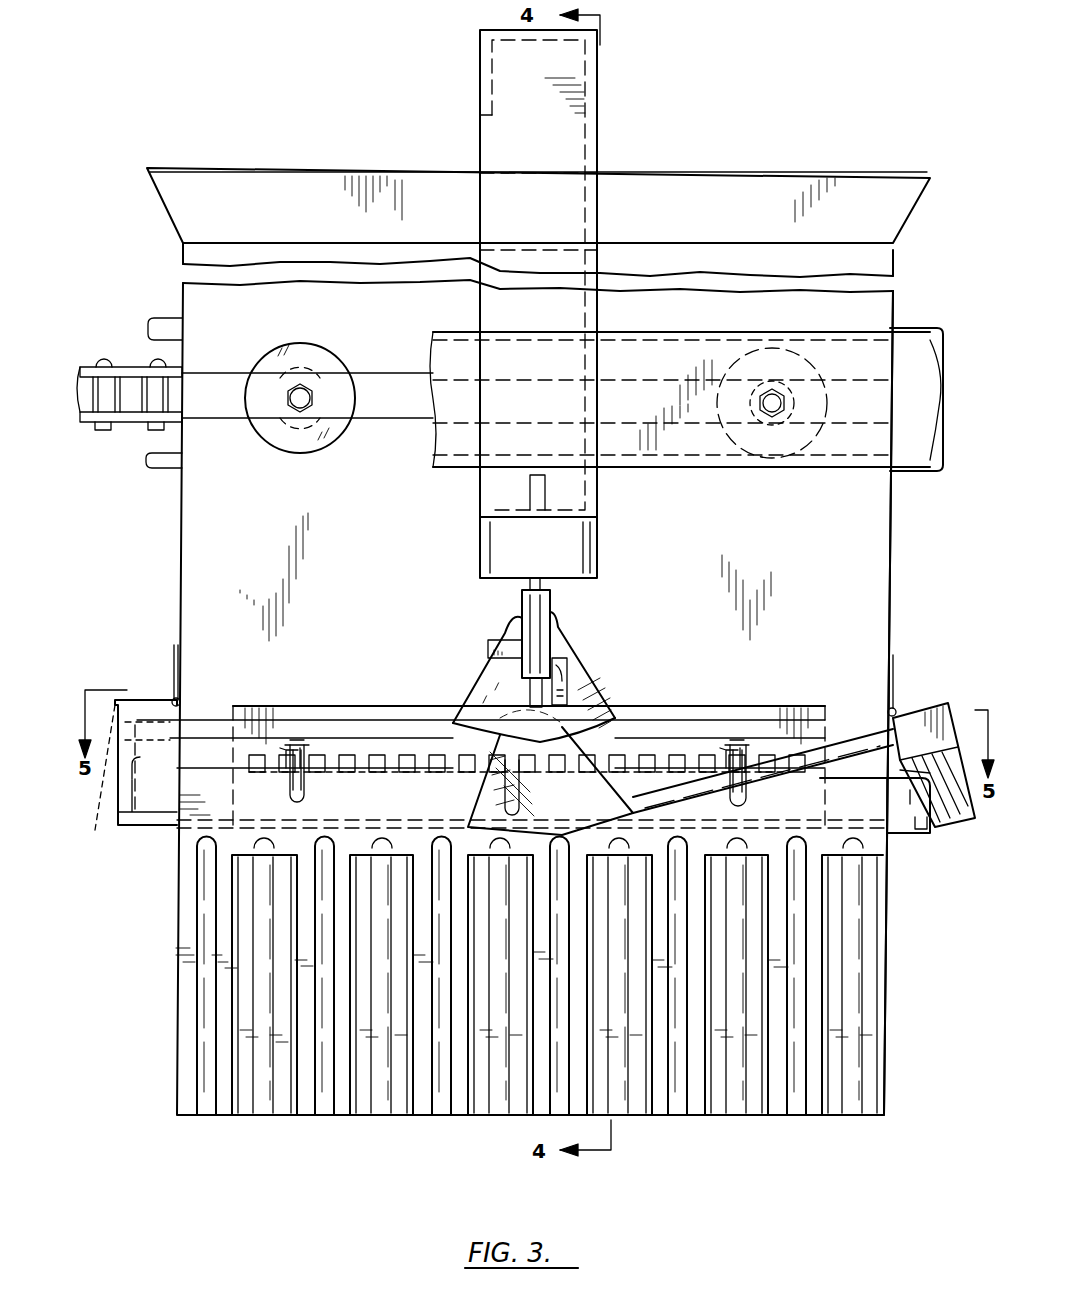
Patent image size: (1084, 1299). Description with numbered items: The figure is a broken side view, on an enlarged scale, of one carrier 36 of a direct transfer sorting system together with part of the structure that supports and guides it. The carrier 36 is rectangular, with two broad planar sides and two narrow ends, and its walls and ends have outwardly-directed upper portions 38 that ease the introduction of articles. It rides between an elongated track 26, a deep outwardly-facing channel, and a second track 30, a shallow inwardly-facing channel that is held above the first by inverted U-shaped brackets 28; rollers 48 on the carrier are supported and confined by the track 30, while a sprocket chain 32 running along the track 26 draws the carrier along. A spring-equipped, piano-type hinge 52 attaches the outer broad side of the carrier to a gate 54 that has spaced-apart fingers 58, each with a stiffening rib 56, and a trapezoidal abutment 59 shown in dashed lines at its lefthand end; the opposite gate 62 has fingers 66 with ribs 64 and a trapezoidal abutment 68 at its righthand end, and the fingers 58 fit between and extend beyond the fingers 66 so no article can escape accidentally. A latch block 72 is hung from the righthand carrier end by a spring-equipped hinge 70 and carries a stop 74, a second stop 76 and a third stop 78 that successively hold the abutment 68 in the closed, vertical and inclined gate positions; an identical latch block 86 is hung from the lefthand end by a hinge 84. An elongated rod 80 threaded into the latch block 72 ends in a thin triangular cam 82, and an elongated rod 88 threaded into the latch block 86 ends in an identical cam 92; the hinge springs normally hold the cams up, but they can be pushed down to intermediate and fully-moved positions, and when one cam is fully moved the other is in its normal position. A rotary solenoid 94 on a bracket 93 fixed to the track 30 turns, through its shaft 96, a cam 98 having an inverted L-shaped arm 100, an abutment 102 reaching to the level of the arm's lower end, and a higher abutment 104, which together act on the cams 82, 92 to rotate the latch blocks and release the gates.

The track 26 is at (162, 470).
The inverted U-shaped brackets 28 is at (480, 300).
The second track 30 is at (838, 470).
The sprocket chain 32 is at (128, 445).
The carrier 36 is at (903, 280).
The outwardly-directed upper portions 38 is at (888, 187).
The rollers 48 is at (298, 450).
The spring-equipped piano-type hinge 52 is at (346, 737).
The gate 54 is at (200, 827).
The stiffening rib 56 is at (202, 1117).
The fingers 58 is at (176, 1120).
The abutment 59 is at (118, 806).
The gate 62 is at (887, 900).
The stiffening rib 64 is at (264, 1114).
The fingers 66 is at (244, 1114).
The abutment 68 is at (894, 832).
The spring-equipped piano-type hinge 70 is at (894, 686).
The latch block 72 is at (944, 696).
The stop 74 is at (960, 810).
The second stop 76 is at (943, 826).
The third stop 78 is at (920, 845).
The elongated rod 80 is at (850, 746).
The cam 82 is at (477, 791).
The spring-equipped piano-type hinge 84 is at (174, 660).
The latch block 86 is at (120, 712).
The elongated rod 88 is at (211, 713).
The cam 92 is at (573, 680).
The bracket 93 is at (480, 495).
The rotary solenoid 94 is at (490, 554).
The shaft 96 is at (522, 594).
The cam 98 is at (550, 609).
The inverted L-shaped arm 100 is at (530, 690).
The abutment 102 is at (562, 682).
The abutment 104 is at (490, 641).